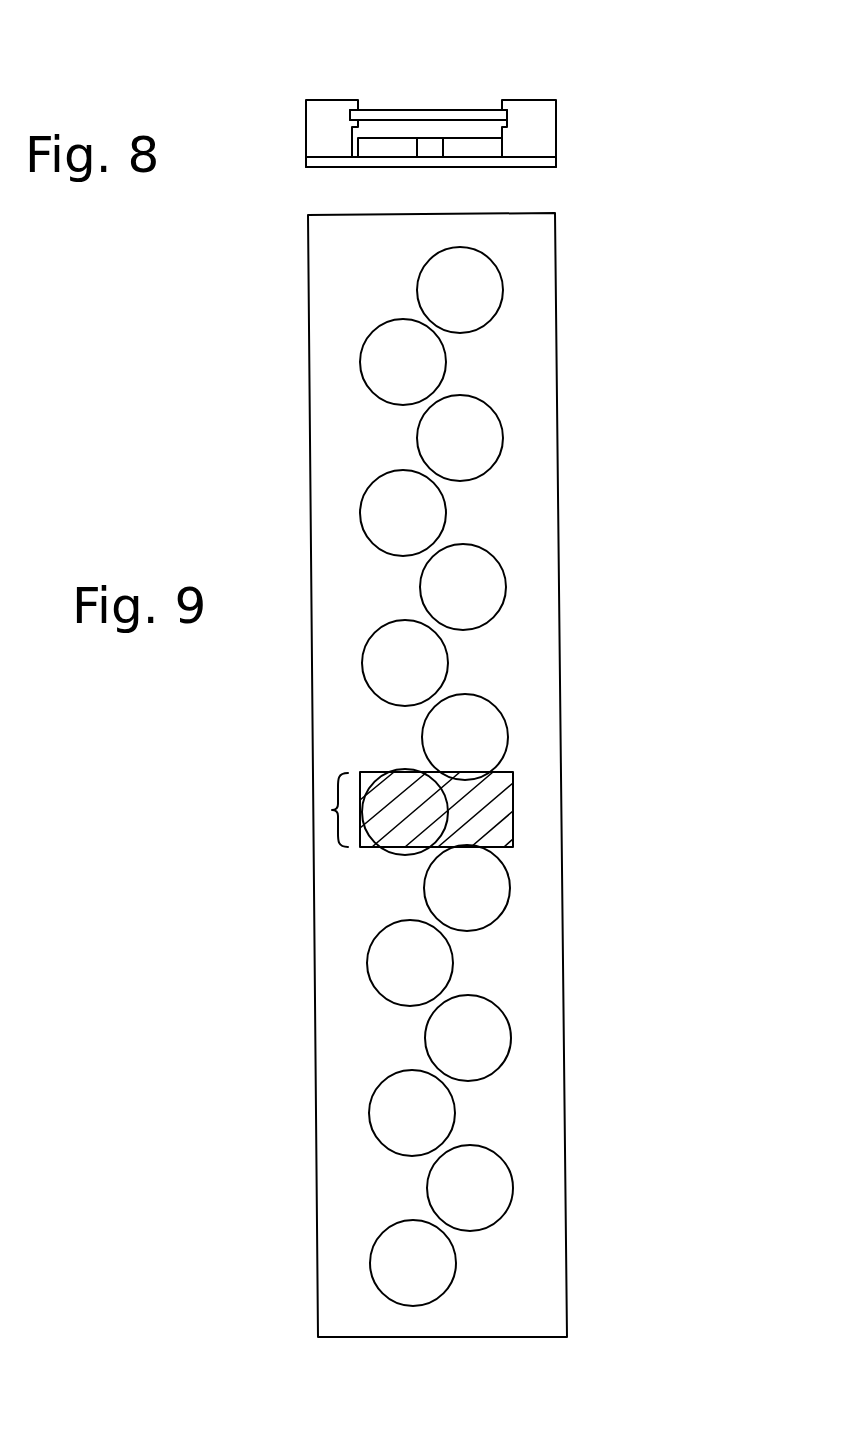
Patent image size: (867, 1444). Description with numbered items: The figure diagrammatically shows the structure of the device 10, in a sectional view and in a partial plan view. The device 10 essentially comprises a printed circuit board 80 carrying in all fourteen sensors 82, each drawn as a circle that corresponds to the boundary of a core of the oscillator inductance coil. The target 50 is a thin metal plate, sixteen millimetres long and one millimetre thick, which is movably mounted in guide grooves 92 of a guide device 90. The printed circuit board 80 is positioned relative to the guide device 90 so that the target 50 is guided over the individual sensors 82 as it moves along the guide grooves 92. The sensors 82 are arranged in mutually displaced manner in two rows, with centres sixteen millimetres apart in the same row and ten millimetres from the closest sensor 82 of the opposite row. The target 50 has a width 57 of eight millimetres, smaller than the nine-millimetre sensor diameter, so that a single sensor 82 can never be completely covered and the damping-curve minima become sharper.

In FIG. 8, the device 10 is at (626, 110).
In FIG. 9, the device 10 is at (258, 426).
In FIG. 8, the target 50 is at (415, 115).
In FIG. 9, the target 50 is at (480, 813).
In FIG. 9, the width 57 is at (332, 810).
In FIG. 8, the printed circuit board 80 is at (543, 162).
In FIG. 9, the printed circuit board 80 is at (515, 978).
In FIG. 8, the sensors 82 is at (392, 150).
In FIG. 9, the sensors 82 is at (473, 450).
In FIG. 8, the guide device 90 is at (320, 121).
In FIG. 8, the guide grooves 92 is at (507, 113).